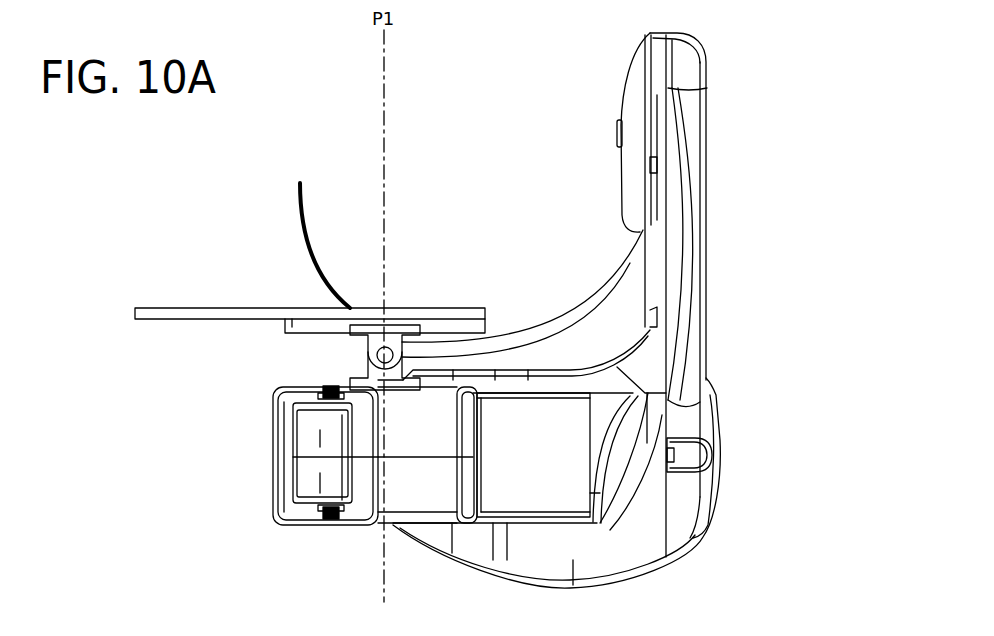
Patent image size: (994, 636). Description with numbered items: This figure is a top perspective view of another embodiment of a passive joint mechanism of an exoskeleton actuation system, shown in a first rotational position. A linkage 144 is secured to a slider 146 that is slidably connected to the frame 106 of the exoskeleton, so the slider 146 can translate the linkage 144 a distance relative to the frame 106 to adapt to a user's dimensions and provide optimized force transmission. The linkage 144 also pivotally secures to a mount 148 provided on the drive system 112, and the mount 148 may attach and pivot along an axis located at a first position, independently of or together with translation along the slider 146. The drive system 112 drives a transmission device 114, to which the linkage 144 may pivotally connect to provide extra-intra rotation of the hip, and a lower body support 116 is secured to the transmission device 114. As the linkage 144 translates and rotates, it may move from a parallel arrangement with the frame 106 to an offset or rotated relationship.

The frame 106 is at (195, 311).
The drive system 112 is at (362, 515).
The transmission device 114 is at (682, 223).
The lower body support 116 is at (586, 314).
The linkage 144 is at (346, 348).
The slider 146 is at (283, 323).
The mount 148 is at (372, 392).